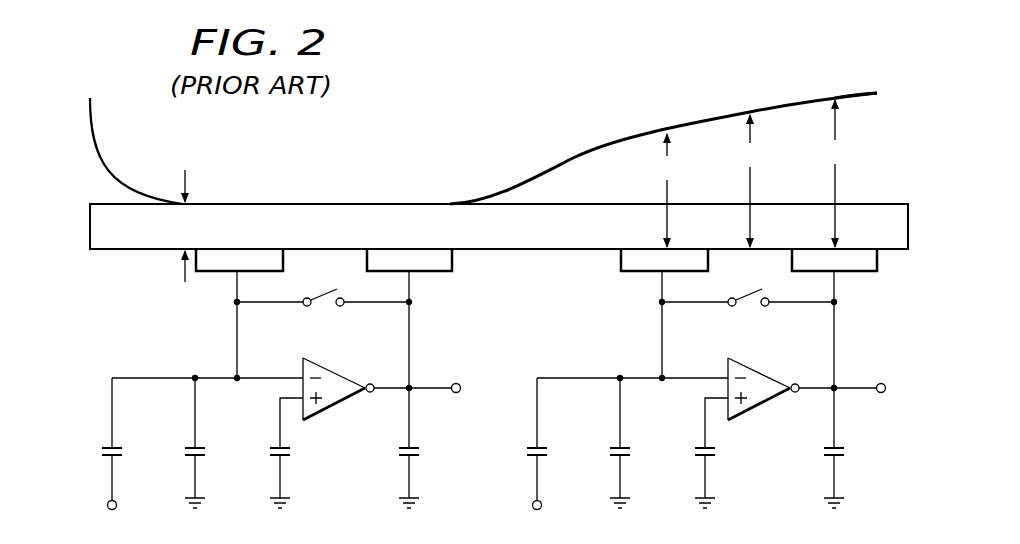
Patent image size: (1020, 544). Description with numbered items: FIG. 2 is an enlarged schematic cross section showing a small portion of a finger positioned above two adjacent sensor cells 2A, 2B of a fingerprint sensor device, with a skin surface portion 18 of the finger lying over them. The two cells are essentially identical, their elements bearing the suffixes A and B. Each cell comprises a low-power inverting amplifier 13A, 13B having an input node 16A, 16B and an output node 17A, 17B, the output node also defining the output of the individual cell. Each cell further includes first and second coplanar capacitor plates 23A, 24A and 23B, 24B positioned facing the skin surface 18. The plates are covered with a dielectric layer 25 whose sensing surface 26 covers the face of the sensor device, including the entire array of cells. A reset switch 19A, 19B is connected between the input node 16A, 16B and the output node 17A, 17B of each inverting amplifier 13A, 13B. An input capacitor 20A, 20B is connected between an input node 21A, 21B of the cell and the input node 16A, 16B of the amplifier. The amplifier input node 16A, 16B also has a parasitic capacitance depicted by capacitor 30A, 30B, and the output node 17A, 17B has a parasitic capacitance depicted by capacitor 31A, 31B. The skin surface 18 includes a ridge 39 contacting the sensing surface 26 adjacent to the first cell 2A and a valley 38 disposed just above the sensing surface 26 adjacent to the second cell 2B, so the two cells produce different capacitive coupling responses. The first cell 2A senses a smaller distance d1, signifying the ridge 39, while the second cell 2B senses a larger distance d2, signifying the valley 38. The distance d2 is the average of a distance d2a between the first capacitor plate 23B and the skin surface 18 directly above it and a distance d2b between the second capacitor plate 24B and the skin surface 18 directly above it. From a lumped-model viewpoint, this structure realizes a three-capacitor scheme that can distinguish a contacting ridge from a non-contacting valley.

The first cell 2A is at (130, 332).
The second cell 2B is at (678, 391).
The inverting amplifier 13A is at (333, 405).
The inverting amplifier 13B is at (748, 433).
The input node 16A is at (190, 383).
The input node 16B is at (632, 402).
The output node 17A is at (430, 390).
The output node 17B is at (843, 415).
The skin surface portion 18 is at (575, 157).
The reset switch 19A is at (327, 306).
The reset switch 19B is at (748, 323).
The input capacitor 20A is at (102, 455).
The input capacitor 20B is at (508, 439).
The input node of the cell 21A is at (106, 507).
The input node of the cell 21B is at (505, 518).
The first capacitor plate 23A is at (432, 272).
The first capacitor plate 23B is at (839, 348).
The second capacitor plate 24A is at (217, 272).
The second capacitor plate 24B is at (660, 313).
The dielectric layer 25 is at (90, 226).
The sensing surface 26 is at (880, 202).
The parasitic capacitor 30A is at (175, 455).
The parasitic capacitor 30B is at (591, 443).
The parasitic capacitor 31A is at (397, 455).
The parasitic capacitor 31B is at (805, 478).
The valley 38 is at (867, 80).
The ridge 39 is at (319, 200).
The distance d1 is at (184, 226).
The distance d2 is at (750, 181).
The distance d2a is at (835, 173).
The distance d2b is at (666, 190).